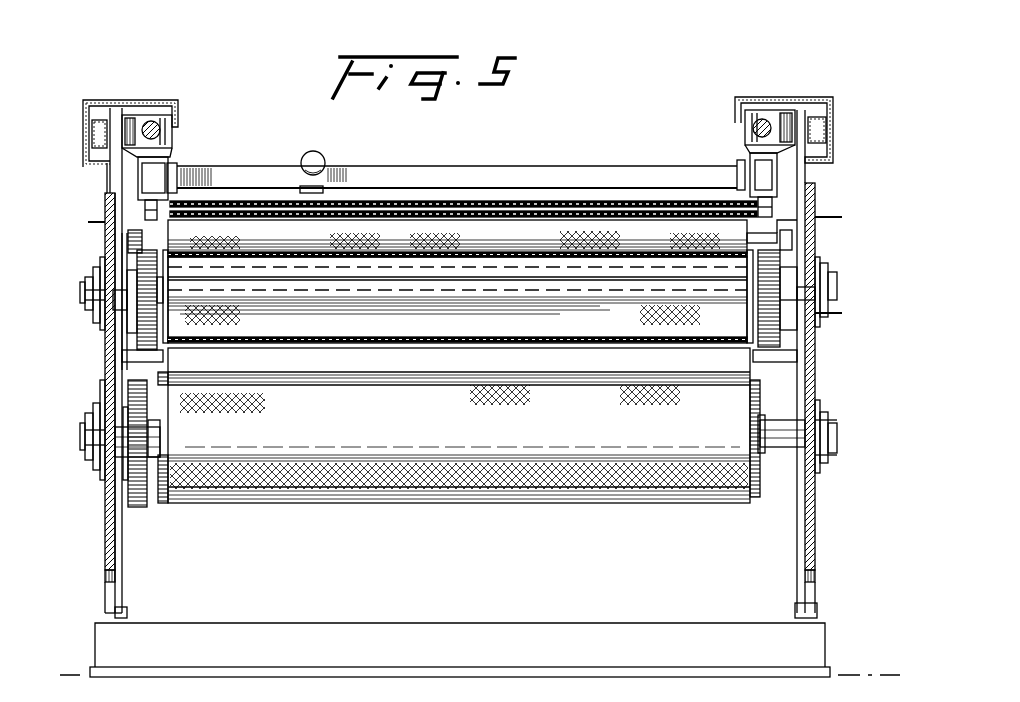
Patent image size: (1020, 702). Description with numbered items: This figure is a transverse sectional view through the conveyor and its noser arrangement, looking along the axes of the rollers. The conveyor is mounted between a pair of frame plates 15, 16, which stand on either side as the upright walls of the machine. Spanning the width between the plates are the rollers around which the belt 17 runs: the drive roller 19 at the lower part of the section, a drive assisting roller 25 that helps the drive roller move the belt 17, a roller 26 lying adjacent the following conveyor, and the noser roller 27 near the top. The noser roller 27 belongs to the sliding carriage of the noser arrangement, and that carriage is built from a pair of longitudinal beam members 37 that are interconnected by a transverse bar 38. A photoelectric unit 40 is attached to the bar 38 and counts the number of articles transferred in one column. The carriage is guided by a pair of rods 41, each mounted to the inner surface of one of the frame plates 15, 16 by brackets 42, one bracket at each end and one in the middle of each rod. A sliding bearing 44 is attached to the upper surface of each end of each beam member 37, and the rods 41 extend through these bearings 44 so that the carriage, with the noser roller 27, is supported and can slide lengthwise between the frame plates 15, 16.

The frame plate 15 is at (105, 528).
The frame plate 16 is at (815, 543).
The belt 17 is at (527, 337).
The drive roller 19 is at (757, 475).
The drive assisting roller 25 is at (740, 355).
The roller 26 is at (418, 227).
The noser roller 27 is at (662, 203).
The longitudinal beam member 37 is at (140, 178).
The transverse bar 38 is at (590, 173).
The photoelectric unit 40 is at (300, 150).
The rod 41 is at (145, 128).
The bracket 42 is at (160, 120).
The sliding bearing 44 is at (172, 147).